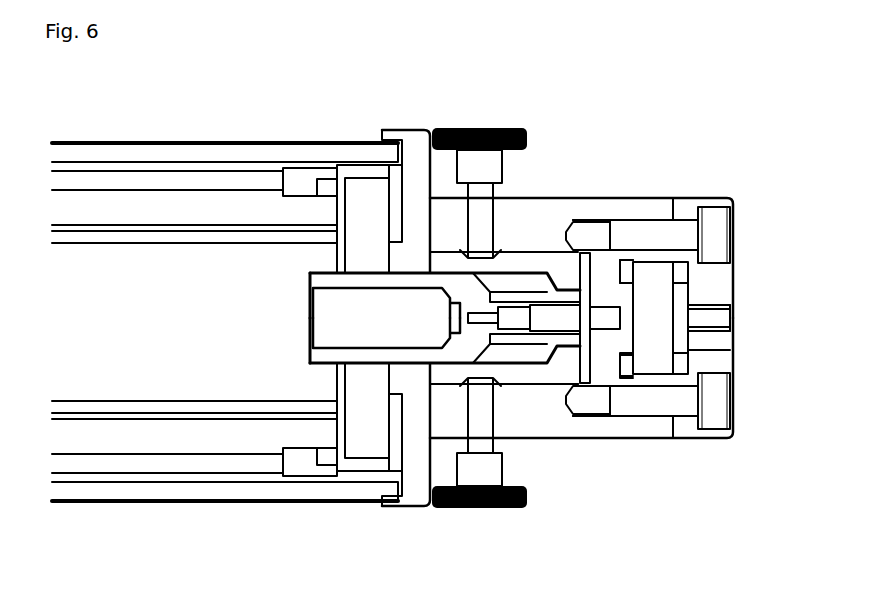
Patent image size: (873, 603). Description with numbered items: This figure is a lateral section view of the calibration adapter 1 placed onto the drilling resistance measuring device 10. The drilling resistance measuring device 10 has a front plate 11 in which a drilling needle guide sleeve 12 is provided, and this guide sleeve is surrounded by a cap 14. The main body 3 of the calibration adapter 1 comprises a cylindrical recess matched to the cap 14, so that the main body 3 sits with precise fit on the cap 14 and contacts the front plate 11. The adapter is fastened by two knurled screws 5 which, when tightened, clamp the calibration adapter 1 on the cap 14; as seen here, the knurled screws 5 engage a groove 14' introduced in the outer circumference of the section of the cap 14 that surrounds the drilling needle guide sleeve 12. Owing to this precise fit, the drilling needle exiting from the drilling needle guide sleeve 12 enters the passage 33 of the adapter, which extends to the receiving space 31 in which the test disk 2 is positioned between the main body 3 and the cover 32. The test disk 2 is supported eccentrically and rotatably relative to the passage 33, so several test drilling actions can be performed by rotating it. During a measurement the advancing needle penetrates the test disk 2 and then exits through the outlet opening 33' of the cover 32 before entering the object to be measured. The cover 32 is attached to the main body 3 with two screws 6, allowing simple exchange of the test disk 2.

The calibration adapter 1 is at (551, 286).
The test disk 2 is at (660, 342).
The main body 3 is at (572, 208).
The knurled screw 5 is at (482, 128).
The screw 6 is at (723, 227).
The drilling resistance measuring device 10 is at (260, 120).
The front plate 11 is at (408, 128).
The drilling needle guide sleeve 12 is at (532, 357).
The cap 14 is at (328, 318).
The groove 14' is at (504, 412).
The receiving space 31 is at (627, 363).
The cover 32 is at (690, 200).
The passage 33 is at (600, 318).
The outlet opening 33' is at (740, 318).